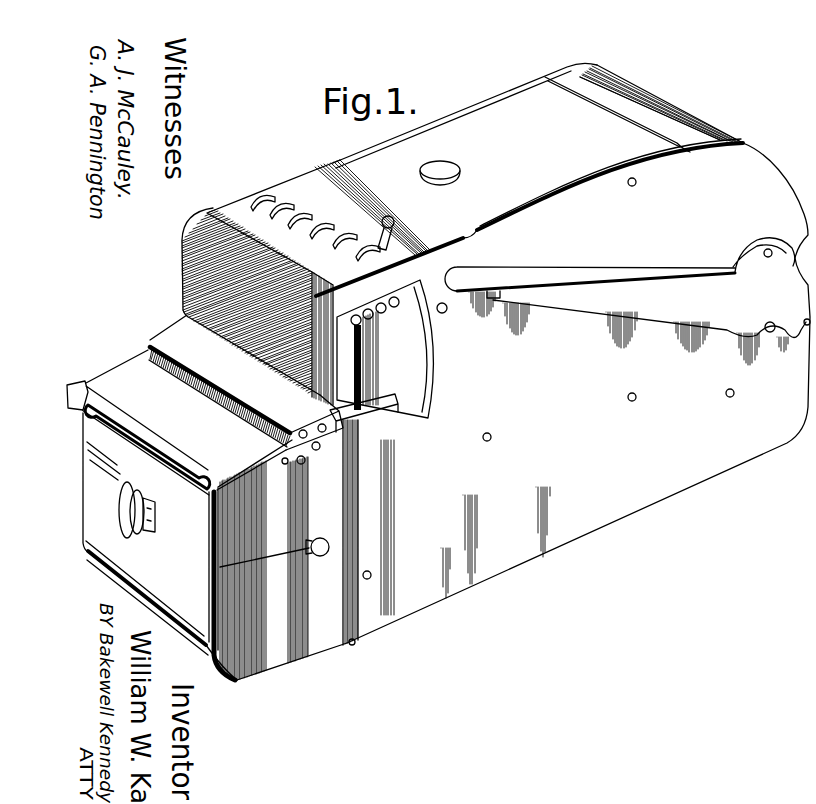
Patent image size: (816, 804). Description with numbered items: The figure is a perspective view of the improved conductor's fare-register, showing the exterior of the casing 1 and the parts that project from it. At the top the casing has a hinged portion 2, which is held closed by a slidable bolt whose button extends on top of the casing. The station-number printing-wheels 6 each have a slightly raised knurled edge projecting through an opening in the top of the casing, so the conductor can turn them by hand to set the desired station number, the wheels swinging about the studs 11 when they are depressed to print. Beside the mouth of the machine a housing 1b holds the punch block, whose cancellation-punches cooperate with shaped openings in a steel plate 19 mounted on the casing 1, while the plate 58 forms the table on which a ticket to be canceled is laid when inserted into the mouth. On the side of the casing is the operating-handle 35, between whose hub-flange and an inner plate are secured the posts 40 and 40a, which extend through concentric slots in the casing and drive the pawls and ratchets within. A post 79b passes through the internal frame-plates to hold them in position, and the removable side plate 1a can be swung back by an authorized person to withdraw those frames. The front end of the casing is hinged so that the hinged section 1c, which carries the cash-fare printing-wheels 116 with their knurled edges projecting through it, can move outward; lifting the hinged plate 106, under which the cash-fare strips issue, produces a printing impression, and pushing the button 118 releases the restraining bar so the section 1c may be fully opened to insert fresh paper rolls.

The casing 1 is at (322, 282).
The side plate 1a is at (484, 100).
The housing / hinge of casing front end 1b is at (373, 374).
The hinged section 1c is at (187, 590).
The hinged portion 2 is at (581, 151).
The printing-wheels 6 is at (287, 192).
The studs 11 is at (447, 309).
The steel plate 19 is at (391, 409).
The operating-handle 35 is at (590, 288).
The post 40 is at (764, 251).
The post 40a is at (767, 333).
The plate 58 is at (246, 382).
The post 79b is at (764, 423).
The hinged plate 106 is at (138, 422).
The printing-wheels 116 is at (148, 492).
The button 118 is at (329, 543).